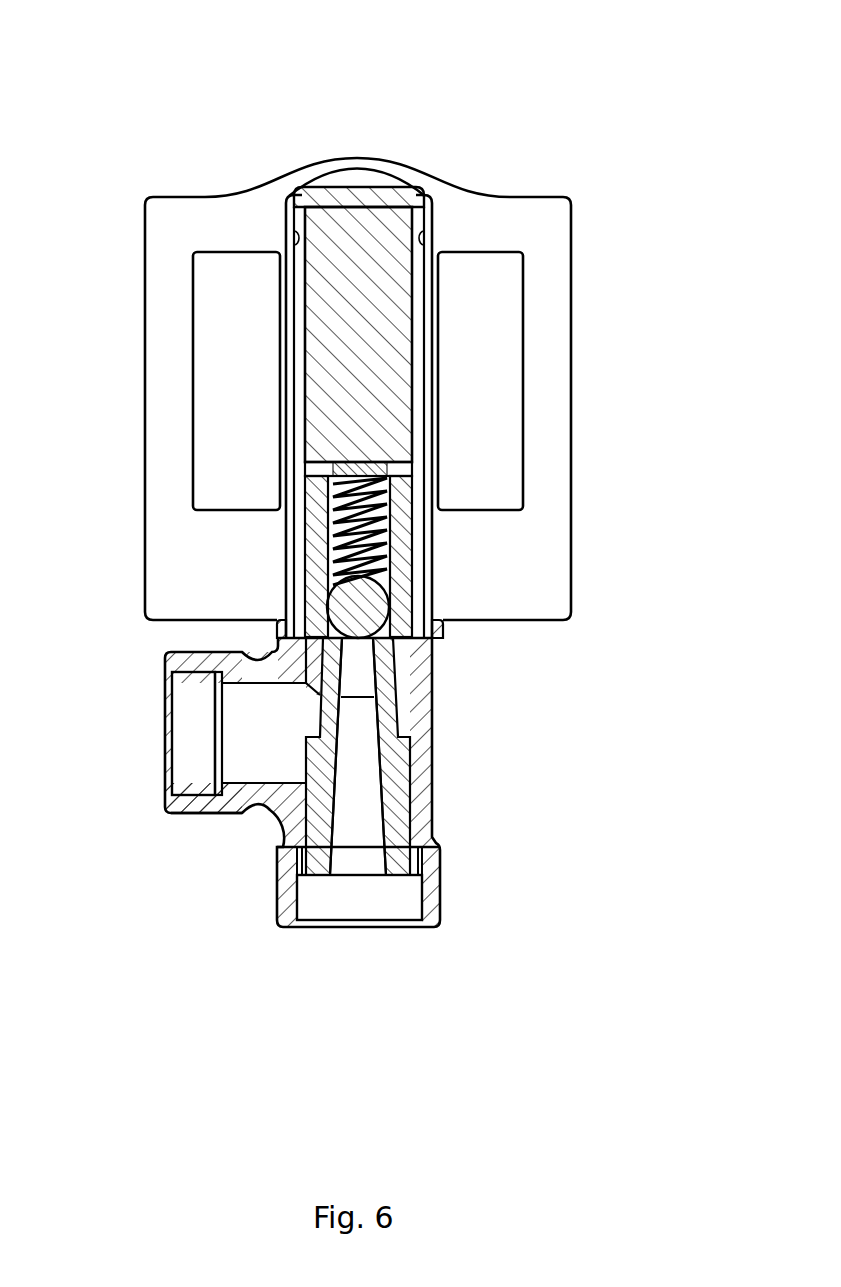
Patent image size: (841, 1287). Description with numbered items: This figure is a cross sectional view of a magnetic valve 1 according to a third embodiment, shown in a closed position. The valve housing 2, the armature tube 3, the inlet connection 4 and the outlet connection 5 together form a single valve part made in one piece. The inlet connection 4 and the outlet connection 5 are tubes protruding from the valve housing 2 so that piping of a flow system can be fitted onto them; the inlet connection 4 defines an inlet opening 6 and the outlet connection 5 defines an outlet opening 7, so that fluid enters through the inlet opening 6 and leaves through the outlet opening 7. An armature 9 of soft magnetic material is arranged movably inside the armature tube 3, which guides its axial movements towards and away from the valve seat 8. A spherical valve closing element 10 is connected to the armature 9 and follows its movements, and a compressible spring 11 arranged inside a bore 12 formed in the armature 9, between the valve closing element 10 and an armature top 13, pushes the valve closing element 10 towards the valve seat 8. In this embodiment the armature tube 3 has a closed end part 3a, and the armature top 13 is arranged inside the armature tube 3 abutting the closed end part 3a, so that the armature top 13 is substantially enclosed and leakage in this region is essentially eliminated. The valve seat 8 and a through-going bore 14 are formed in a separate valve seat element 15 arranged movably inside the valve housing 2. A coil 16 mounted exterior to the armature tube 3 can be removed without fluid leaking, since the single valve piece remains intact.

The magnetic valve 1 is at (700, 76).
The valve housing 2 is at (422, 697).
The armature tube 3 is at (426, 550).
The closed end part 3a is at (370, 198).
The inlet connection 4 is at (192, 806).
The outlet connection 5 is at (435, 887).
The inlet opening 6 is at (190, 745).
The outlet opening 7 is at (370, 893).
The valve seat 8 is at (420, 637).
The armature 9 is at (313, 592).
The valve closing element 10 is at (352, 617).
The compressible spring 11 is at (330, 490).
The bore 12 is at (372, 495).
The armature top 13 is at (333, 235).
The through-going bore 14 is at (355, 770).
The valve seat element 15 is at (398, 793).
The coil 16 is at (490, 332).